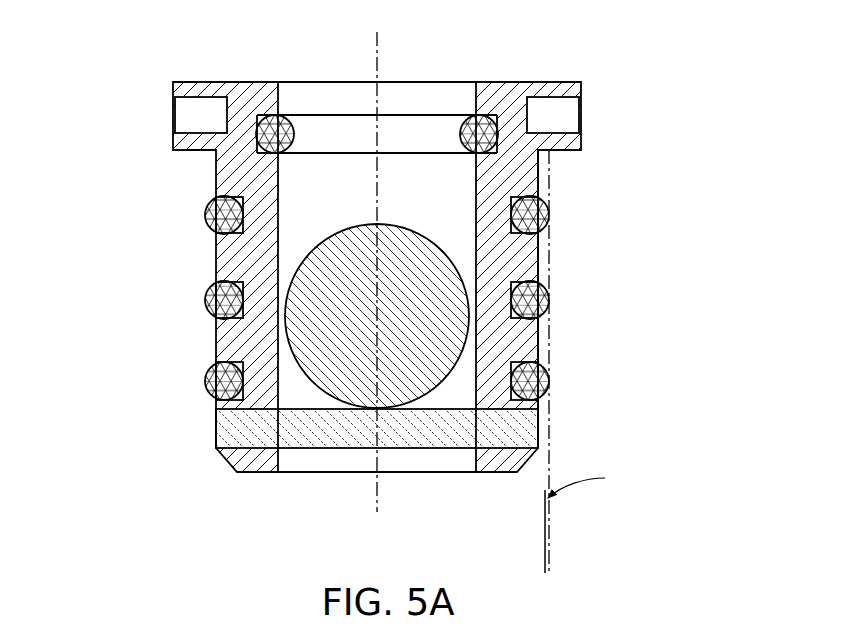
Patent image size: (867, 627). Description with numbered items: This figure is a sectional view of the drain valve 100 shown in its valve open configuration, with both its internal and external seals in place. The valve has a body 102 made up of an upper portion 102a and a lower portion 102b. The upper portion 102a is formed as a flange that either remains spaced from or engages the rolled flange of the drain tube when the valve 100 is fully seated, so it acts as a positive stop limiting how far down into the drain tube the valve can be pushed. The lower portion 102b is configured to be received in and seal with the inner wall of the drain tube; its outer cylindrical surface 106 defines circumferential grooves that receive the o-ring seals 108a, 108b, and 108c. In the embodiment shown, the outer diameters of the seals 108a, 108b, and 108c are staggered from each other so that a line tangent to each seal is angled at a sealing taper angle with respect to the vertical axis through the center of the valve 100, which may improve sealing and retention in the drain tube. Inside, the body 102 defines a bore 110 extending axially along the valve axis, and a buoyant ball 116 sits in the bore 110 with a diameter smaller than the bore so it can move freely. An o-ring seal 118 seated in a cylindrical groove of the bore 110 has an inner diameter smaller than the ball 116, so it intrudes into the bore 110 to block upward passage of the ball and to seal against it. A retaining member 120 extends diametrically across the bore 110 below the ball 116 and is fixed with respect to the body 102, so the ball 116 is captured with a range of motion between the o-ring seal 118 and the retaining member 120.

The valve 100 is at (634, 112).
The body 102 is at (222, 468).
The upper portion 102a is at (148, 82).
The lower portion 102b is at (148, 152).
The outer cylindrical surface 106 is at (544, 256).
The o-ring seal 108a is at (551, 215).
The o-ring seal 108b is at (549, 299).
The o-ring seal 108c is at (549, 389).
The bore 110 is at (444, 99).
The buoyant ball 116 is at (383, 223).
The o-ring seal 118 is at (294, 133).
The retaining member 120 is at (424, 450).